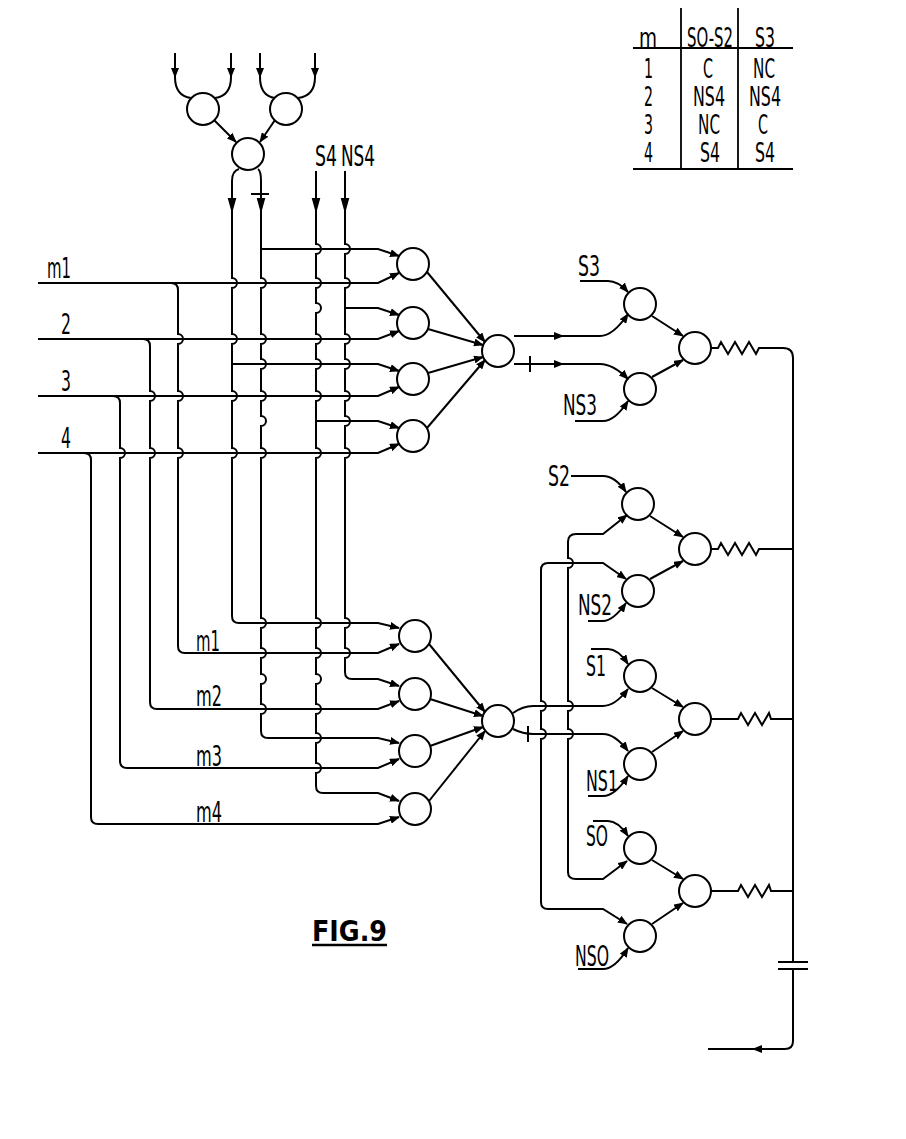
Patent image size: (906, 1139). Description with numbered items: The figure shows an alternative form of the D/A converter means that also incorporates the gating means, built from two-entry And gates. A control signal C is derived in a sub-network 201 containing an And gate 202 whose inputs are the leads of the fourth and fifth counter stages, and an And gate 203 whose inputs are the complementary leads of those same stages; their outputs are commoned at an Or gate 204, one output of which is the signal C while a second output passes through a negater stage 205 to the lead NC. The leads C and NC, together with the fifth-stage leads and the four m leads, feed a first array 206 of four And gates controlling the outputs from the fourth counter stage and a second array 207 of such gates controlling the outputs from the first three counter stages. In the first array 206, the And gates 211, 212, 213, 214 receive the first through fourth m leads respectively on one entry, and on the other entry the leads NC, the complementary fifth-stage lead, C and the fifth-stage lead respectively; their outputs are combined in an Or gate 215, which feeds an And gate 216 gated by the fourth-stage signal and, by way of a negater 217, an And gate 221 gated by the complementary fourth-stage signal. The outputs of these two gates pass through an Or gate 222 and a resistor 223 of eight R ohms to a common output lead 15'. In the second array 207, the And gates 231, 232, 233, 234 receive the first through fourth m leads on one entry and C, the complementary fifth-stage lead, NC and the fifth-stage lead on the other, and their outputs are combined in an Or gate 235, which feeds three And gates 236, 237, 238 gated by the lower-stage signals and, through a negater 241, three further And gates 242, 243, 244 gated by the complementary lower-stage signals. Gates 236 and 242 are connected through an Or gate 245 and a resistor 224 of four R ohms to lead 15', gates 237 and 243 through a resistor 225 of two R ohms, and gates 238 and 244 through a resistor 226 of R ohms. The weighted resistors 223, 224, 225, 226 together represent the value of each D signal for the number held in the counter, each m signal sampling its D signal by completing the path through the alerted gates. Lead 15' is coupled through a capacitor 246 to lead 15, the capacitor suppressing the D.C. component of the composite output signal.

The sub-network 201 is at (262, 116).
The And gate 202 is at (188, 120).
The And gate 203 is at (298, 110).
The Or gate 204 is at (230, 158).
The negater stage 205 is at (258, 178).
The first array of And gates 206 is at (472, 247).
The second array of And gates 207 is at (467, 617).
The And gate 211 is at (420, 245).
The And gate 212 is at (437, 296).
The And gate 213 is at (443, 352).
The And gate 214 is at (418, 452).
The Or gate 215 is at (502, 334).
The And gate 216 is at (649, 292).
The negater 217 is at (530, 372).
The And gate 221 is at (651, 398).
The Or gate 222 is at (698, 332).
The resistor 223 is at (740, 358).
The resistor 224 is at (742, 560).
The resistor 225 is at (745, 730).
The resistor 226 is at (745, 900).
The And gate 231 is at (403, 620).
The And gate 232 is at (416, 678).
The And gate 233 is at (410, 735).
The And gate 234 is at (422, 800).
The Or gate 235 is at (502, 705).
The And gate 236 is at (648, 490).
The And gate 237 is at (648, 662).
The And gate 238 is at (648, 834).
The negater 241 is at (523, 745).
The And gate 242 is at (650, 596).
The And gate 243 is at (650, 772).
The And gate 244 is at (642, 952).
The Or gate 245 is at (698, 533).
The capacitor 246 is at (798, 960).
The lead 15 is at (745, 1009).
The common output lead 15' is at (809, 659).